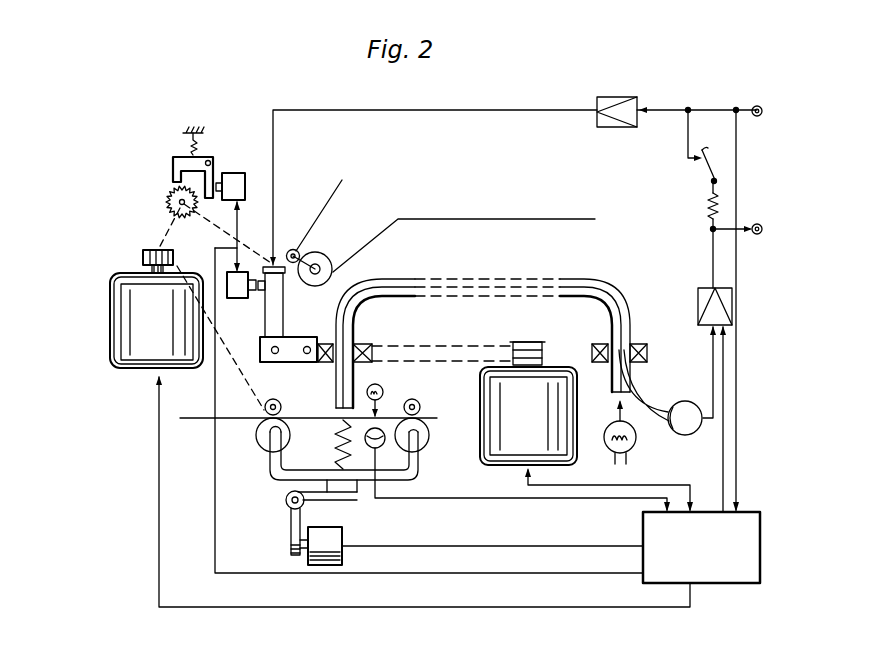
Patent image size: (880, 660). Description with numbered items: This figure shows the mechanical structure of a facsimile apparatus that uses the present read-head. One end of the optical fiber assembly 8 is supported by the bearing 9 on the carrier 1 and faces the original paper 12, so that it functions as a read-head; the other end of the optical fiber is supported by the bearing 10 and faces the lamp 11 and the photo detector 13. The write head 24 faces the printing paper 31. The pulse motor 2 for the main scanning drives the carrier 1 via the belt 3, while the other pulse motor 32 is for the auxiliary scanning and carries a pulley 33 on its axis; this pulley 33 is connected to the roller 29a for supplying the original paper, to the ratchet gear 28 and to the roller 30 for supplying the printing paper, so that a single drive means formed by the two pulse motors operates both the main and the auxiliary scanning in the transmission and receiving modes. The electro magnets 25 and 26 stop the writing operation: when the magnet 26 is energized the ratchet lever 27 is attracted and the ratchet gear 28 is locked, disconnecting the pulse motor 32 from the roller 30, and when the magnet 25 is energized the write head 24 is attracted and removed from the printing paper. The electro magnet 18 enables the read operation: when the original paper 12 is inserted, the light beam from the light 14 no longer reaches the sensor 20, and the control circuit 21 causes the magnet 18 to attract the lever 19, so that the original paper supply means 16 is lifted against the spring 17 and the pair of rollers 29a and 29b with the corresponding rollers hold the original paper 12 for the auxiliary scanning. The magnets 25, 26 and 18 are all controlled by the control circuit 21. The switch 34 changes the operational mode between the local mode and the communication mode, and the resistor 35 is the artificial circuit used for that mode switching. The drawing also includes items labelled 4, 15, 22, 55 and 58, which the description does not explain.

The carrier 1 is at (297, 338).
The pulse motor 2 is at (480, 387).
The belt 3 is at (542, 357).
The nozzle plate 4 is at (520, 342).
The optical fiber assembly 8 is at (390, 280).
The bearing 9 is at (364, 345).
The bearing 10 is at (646, 350).
The lamp 11 is at (636, 444).
The original paper 12 is at (307, 416).
The photo detector 13 is at (678, 402).
The light 14 is at (385, 392).
The terminal 15 is at (756, 224).
The original paper supply means 16 is at (421, 480).
The spring 17 is at (334, 450).
The electro magnet 18 is at (342, 535).
The lever 19 is at (289, 529).
The sensor 20 is at (380, 442).
The control circuit 21 is at (705, 590).
The terminal 22 is at (754, 106).
The write head 24 is at (266, 326).
The electro magnet 25 is at (236, 298).
The electro magnet 26 is at (237, 174).
The ratchet lever 27 is at (208, 158).
The ratchet gear 28 is at (166, 188).
The roller 29a is at (256, 436).
The roller 29b is at (430, 430).
The roller 30 is at (326, 258).
The printing paper 31 is at (370, 228).
The pulse motor 32 is at (126, 370).
The pulley 33 is at (152, 249).
The switch 34 is at (702, 167).
The resistor 35 is at (707, 204).
The amplifier 55 is at (695, 304).
The amplifier 58 is at (618, 96).